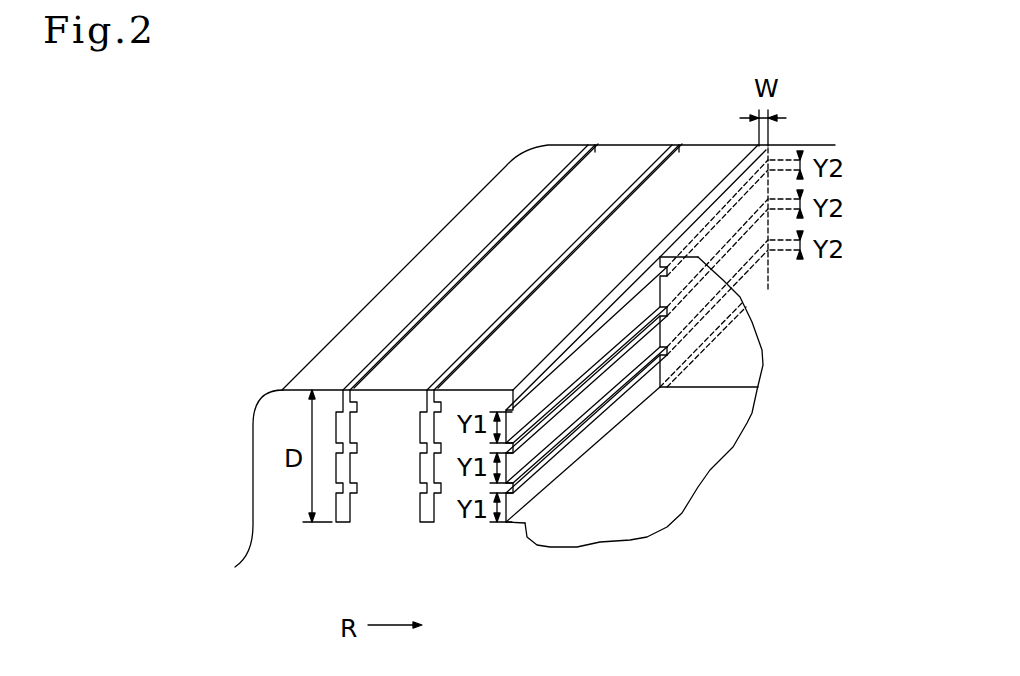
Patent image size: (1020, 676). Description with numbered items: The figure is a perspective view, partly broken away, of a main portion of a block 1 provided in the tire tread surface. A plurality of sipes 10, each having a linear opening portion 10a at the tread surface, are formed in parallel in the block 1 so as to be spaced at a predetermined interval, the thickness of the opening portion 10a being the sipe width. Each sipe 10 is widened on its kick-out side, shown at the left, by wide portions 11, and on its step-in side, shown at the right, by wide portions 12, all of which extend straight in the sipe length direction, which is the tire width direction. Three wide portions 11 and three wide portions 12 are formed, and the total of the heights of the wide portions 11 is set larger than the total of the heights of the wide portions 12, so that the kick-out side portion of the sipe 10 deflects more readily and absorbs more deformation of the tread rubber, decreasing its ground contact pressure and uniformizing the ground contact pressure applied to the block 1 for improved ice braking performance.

The block 1 is at (452, 232).
The sipe 10 is at (524, 208).
The opening portion 10a is at (657, 168).
The wide portion 11 is at (420, 425).
The wide portion 12 is at (437, 400).